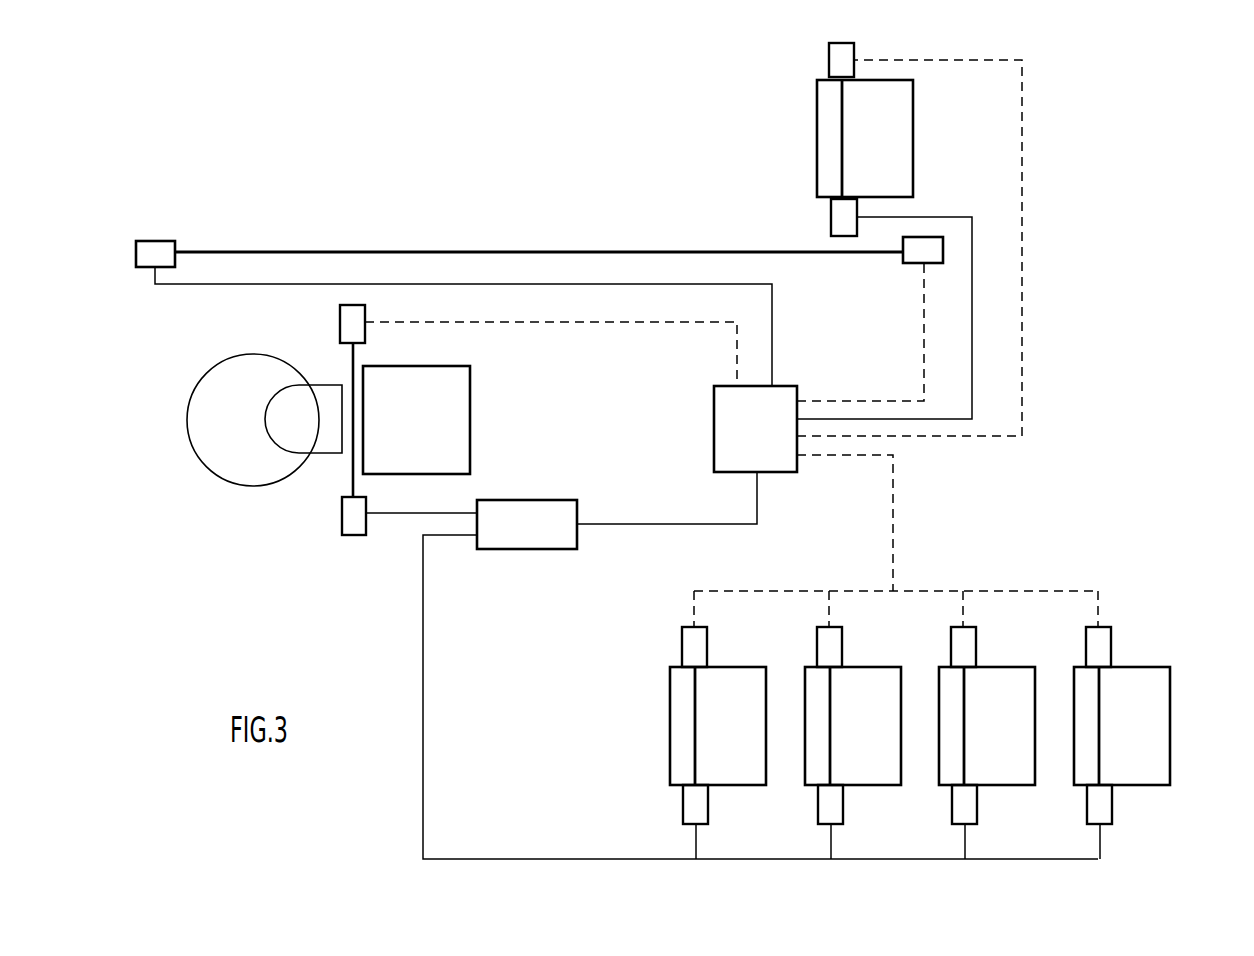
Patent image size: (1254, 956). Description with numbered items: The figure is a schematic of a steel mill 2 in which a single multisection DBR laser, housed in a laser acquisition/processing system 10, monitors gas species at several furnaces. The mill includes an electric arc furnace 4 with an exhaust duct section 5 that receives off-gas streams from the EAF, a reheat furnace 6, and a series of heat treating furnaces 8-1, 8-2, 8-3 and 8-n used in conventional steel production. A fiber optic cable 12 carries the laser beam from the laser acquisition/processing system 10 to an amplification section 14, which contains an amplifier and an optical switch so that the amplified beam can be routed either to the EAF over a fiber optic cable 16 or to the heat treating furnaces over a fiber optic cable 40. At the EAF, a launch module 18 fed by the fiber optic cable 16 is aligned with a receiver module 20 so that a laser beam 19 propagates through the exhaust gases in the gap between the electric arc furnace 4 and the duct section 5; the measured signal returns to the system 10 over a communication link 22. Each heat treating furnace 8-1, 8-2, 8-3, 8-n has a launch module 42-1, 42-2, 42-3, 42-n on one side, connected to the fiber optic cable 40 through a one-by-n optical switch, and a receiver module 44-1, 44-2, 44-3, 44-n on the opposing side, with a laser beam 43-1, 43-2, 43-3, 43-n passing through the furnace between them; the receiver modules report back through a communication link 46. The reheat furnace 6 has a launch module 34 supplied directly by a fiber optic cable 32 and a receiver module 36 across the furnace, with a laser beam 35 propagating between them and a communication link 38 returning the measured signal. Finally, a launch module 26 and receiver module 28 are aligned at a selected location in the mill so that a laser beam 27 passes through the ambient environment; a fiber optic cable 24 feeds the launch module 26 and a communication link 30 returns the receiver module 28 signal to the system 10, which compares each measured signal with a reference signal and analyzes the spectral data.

The steel mill 2 is at (1162, 216).
The electric arc furnace 4 is at (202, 396).
The exhaust duct section 5 is at (470, 408).
The reheat furnace 6 is at (817, 126).
The heat treating furnace 8-1 is at (671, 757).
The heat treating furnace 8-2 is at (829, 747).
The heat treating furnace 8-3 is at (963, 747).
The heat treating furnace 8-n is at (1098, 747).
The laser acquisition/processing system 10 is at (766, 436).
The fiber optic cable 12 is at (617, 524).
The amplification section 14 is at (542, 500).
The fiber optic cable 16 is at (421, 515).
The launch module 18 is at (342, 517).
The laser beam 19 is at (353, 368).
The receiver module 20 is at (340, 325).
The communication link 22 is at (578, 322).
The fiber optic cable 24 is at (772, 335).
The launch module 26 is at (156, 241).
The laser beam 27 is at (443, 252).
The receiver module 28 is at (912, 264).
The communication link 30 is at (843, 401).
The fiber optic cable 32 is at (938, 217).
The launch module 34 is at (831, 217).
The laser beam 35 is at (843, 148).
The receiver module 36 is at (829, 63).
The communication link 38 is at (1022, 270).
The fiber optic cable 40 is at (423, 700).
The launch module 42-1 is at (708, 806).
The launch module 42-2 is at (854, 822).
The launch module 42-3 is at (988, 822).
The launch module 42-n is at (1123, 822).
The laser beam 43-1 is at (695, 736).
The laser beam 43-2 is at (855, 726).
The laser beam 43-3 is at (989, 726).
The laser beam 43-n is at (1124, 726).
The receiver module 44-1 is at (682, 650).
The receiver module 44-2 is at (799, 642).
The receiver module 44-3 is at (933, 642).
The receiver module 44-n is at (1068, 642).
The communication link 46 is at (893, 550).